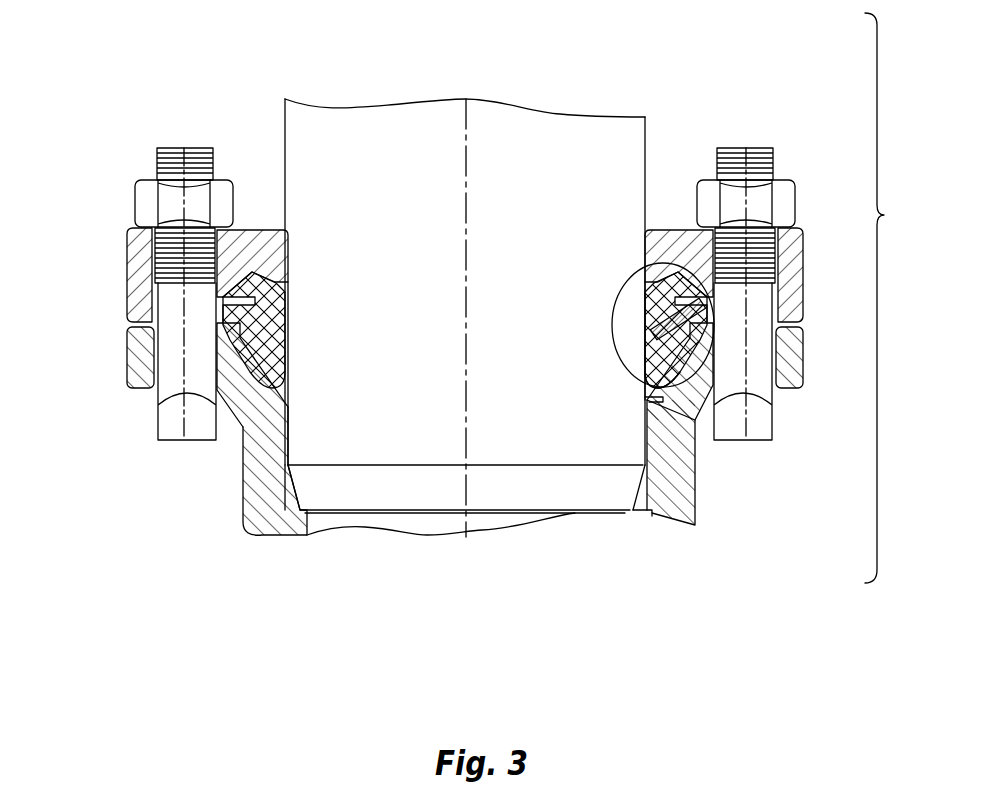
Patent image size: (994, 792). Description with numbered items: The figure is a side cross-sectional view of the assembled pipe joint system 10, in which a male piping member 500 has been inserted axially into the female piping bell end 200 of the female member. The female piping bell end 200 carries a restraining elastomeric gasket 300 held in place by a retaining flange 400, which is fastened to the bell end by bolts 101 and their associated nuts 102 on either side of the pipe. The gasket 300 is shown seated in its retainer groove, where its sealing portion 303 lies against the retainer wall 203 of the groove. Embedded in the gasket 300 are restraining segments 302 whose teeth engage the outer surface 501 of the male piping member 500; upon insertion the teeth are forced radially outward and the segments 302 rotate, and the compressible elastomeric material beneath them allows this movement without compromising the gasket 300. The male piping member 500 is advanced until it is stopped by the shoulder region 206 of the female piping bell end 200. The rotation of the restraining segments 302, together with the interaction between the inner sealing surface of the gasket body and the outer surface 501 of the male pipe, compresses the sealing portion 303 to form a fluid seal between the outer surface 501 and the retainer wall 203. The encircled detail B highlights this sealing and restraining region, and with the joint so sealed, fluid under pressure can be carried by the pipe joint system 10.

The pipe joint system 10 is at (888, 298).
The bolts 101 is at (165, 162).
The nuts 102 is at (145, 213).
The female piping bell end 200 is at (273, 512).
The retainer wall 203 is at (238, 362).
The shoulder region 206 is at (652, 515).
The restraining elastomeric gasket 300 is at (237, 413).
The restraining segment 302 is at (692, 302).
The sealing portion 303 is at (672, 388).
The retaining flange 400 is at (140, 268).
The male piping member 500 is at (386, 113).
The outer surface of the male piping member 501 is at (648, 138).
The detail B is at (638, 262).